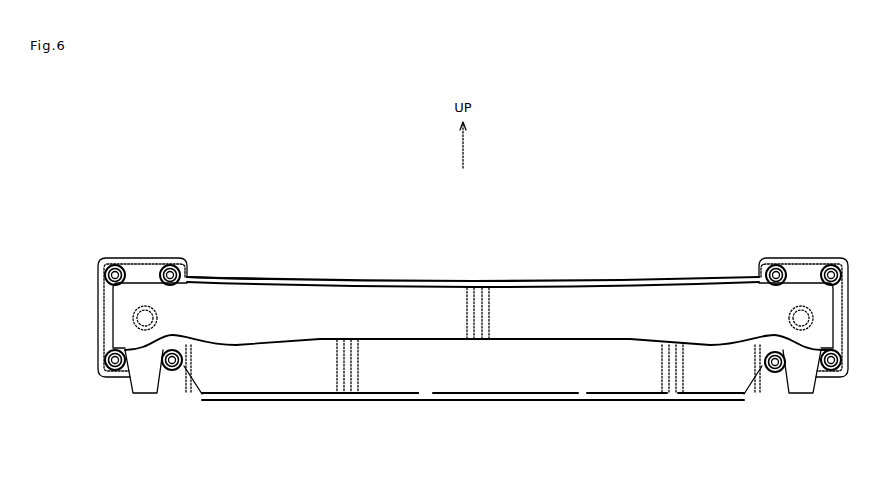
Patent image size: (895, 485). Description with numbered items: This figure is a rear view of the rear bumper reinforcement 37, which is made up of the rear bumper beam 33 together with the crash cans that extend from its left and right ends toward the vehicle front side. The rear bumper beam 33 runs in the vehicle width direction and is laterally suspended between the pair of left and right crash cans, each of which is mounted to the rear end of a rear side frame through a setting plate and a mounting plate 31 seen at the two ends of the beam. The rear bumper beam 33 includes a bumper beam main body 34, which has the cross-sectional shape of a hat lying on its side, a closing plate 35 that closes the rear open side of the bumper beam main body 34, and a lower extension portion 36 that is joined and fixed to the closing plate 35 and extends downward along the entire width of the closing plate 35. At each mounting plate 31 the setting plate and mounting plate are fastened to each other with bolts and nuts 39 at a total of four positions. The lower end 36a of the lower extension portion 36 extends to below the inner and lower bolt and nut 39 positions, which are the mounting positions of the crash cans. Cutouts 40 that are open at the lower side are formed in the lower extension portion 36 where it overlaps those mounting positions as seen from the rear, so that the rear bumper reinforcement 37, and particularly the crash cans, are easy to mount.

The mounting plate 31 is at (147, 259).
The rear bumper beam 33 is at (562, 276).
The bumper beam main body 34 is at (398, 281).
The closing plate 35 is at (431, 326).
The lower extension portion 36 is at (542, 388).
The lower end 36a is at (377, 402).
The rear bumper reinforcement 37 is at (281, 268).
The nut 39 is at (110, 266).
The cutout 40 is at (192, 385).